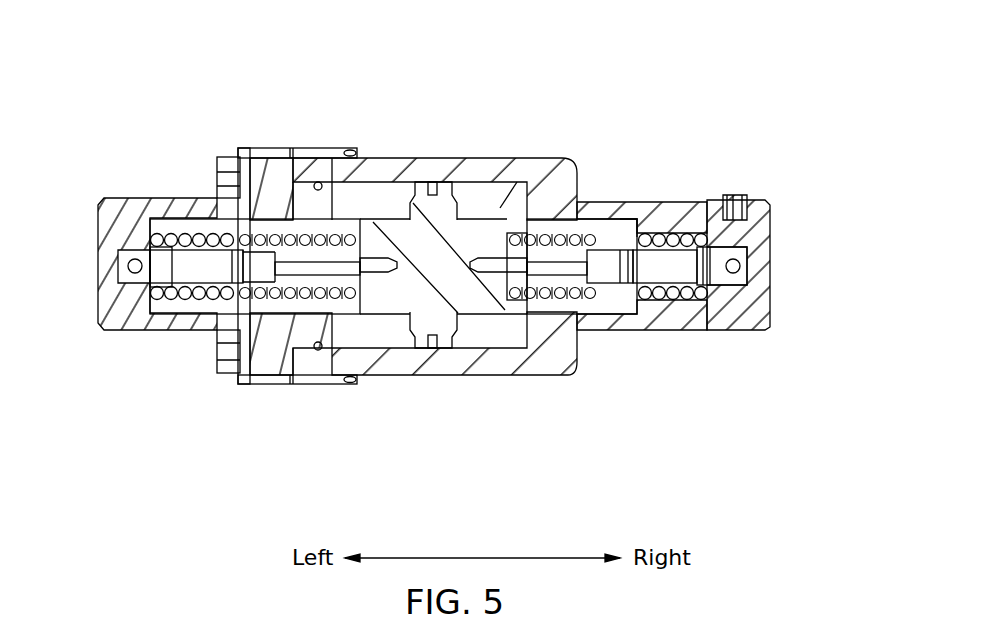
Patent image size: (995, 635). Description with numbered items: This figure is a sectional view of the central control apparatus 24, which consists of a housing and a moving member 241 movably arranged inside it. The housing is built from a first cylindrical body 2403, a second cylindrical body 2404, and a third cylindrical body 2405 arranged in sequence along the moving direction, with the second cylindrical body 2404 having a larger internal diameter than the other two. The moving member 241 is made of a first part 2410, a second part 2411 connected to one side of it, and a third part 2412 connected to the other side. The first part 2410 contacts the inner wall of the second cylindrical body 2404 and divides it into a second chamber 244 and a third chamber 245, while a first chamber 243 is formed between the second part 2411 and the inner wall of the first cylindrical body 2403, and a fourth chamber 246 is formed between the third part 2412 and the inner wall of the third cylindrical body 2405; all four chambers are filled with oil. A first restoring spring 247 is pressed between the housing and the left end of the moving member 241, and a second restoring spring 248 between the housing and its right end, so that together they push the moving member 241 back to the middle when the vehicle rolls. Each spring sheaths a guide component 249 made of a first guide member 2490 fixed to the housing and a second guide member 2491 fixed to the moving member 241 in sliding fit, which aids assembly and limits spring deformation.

The central control apparatus 24 is at (455, 55).
The moving member 241 is at (394, 367).
The first part 2410 is at (437, 330).
The second part 2411 is at (334, 300).
The third part 2412 is at (554, 329).
The first chamber 243 is at (183, 305).
The second chamber 244 is at (373, 211).
The first cylindrical body 2403 is at (231, 201).
The second cylindrical body 2404 is at (415, 166).
The third chamber 245 is at (560, 172).
The third cylindrical body 2405 is at (640, 207).
The fourth chamber 246 is at (697, 225).
The first restoring spring 247 is at (210, 233).
The second restoring spring 248 is at (675, 237).
The guide component 249 is at (711, 350).
The first guide member 2490 is at (717, 283).
The second guide member 2491 is at (590, 270).